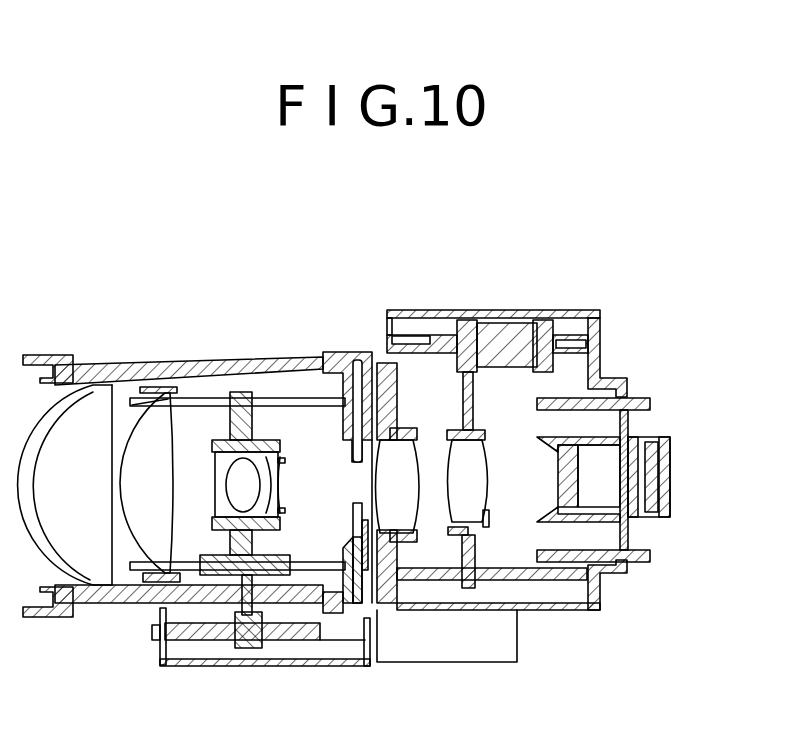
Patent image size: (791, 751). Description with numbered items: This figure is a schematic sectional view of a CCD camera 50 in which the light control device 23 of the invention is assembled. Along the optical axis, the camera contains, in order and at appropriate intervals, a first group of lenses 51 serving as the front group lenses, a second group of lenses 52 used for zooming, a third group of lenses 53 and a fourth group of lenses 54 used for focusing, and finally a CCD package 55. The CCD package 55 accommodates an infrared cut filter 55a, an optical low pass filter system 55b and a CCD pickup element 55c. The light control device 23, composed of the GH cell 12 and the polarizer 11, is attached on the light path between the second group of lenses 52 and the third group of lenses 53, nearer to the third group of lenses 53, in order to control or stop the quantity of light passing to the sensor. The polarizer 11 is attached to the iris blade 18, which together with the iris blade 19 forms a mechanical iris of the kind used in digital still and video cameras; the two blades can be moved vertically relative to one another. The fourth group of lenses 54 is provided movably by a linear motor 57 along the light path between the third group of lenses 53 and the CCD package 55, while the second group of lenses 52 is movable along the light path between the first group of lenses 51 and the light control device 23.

The CCD camera 50 is at (374, 296).
The polarizer 11 is at (355, 503).
The GH cell 12 is at (398, 425).
The iris blade 18 is at (335, 572).
The iris blade 19 is at (334, 352).
The light control device 23 is at (346, 466).
The first group of lenses 51 is at (92, 560).
The second group of lenses 52 is at (225, 500).
The third group of lenses 53 is at (400, 512).
The fourth group of lenses 54 is at (474, 504).
The CCD package 55 is at (647, 475).
The infrared cut filter 55a is at (570, 487).
The optical low pass filter system 55b is at (612, 458).
The CCD pickup element 55c is at (655, 468).
The linear motor 57 is at (510, 335).